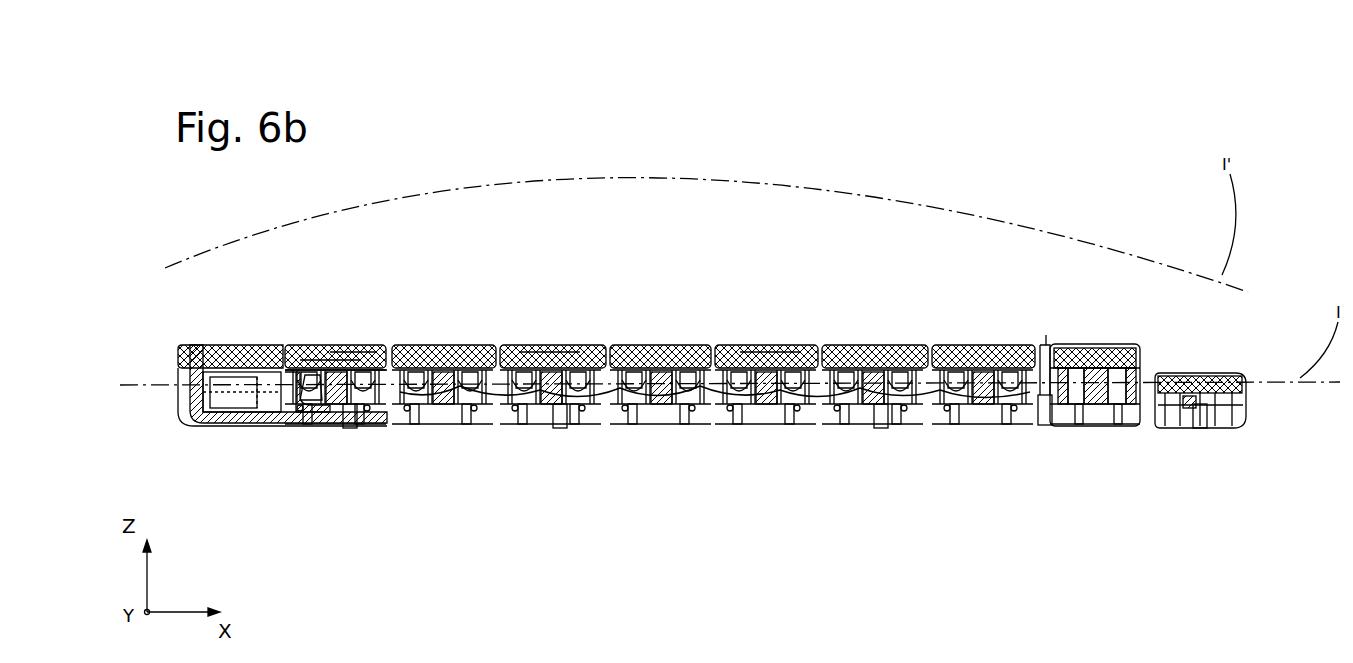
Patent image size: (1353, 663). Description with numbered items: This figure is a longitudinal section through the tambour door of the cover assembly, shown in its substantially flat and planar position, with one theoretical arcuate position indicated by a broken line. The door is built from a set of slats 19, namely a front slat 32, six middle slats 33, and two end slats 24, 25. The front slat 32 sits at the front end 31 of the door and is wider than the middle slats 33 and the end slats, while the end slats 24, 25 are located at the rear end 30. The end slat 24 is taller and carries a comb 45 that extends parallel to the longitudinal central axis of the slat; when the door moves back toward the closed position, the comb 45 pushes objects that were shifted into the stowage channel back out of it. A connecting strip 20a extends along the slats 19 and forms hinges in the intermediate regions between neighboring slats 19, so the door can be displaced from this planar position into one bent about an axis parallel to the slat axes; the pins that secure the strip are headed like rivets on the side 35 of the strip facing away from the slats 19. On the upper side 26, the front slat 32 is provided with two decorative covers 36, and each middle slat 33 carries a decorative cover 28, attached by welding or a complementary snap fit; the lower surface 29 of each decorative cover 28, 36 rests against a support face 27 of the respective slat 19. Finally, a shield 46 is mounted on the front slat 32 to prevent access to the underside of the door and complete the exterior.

The slats 19 is at (350, 430).
The connecting strip 20a is at (1046, 428).
The end slat 24 is at (1115, 345).
The end slat 25 is at (1195, 375).
The upper side 26 is at (420, 345).
The support face 27 is at (240, 345).
The decorative cover 28 is at (545, 345).
The lower surface 29 is at (275, 345).
The rear end 30 is at (1252, 396).
The front end 31 is at (165, 398).
The front slat 32 is at (305, 425).
The middle slats 33 is at (455, 425).
The side 35 is at (685, 422).
The decorative cover 36 is at (195, 345).
The comb 45 is at (1050, 345).
The shield 46 is at (215, 426).